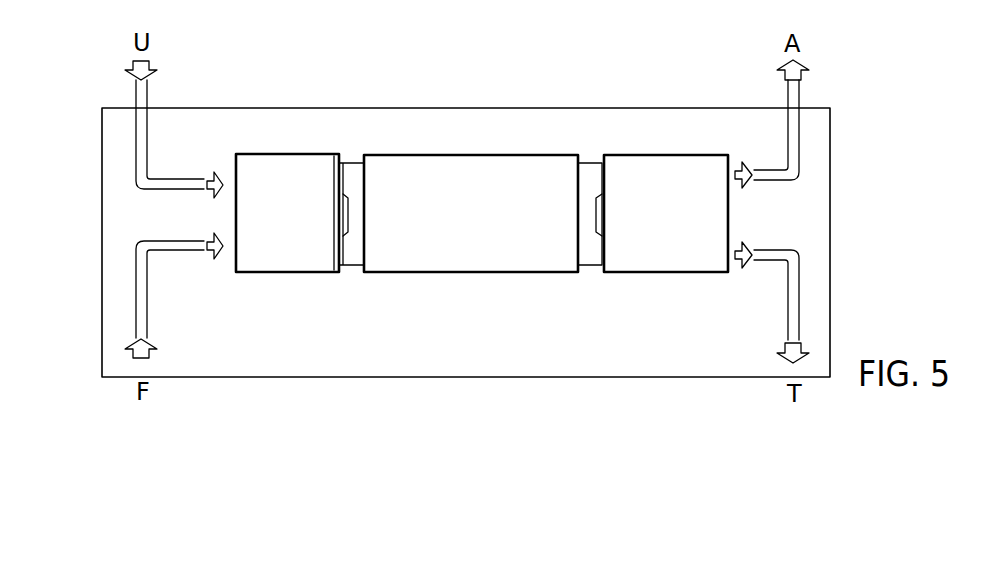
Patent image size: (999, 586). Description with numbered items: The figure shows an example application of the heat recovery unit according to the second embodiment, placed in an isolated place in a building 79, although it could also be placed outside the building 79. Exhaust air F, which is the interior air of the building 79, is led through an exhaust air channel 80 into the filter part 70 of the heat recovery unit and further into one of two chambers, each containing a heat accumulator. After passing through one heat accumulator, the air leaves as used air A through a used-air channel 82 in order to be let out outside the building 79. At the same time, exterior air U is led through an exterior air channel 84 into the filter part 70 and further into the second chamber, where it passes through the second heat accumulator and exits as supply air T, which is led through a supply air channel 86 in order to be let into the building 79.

The filter part 70 is at (253, 163).
The building 79 is at (831, 183).
The exhaust air channel 80 is at (148, 314).
The used-air channel 82 is at (788, 92).
The exterior air channel 84 is at (149, 91).
The supply air channel 86 is at (788, 318).